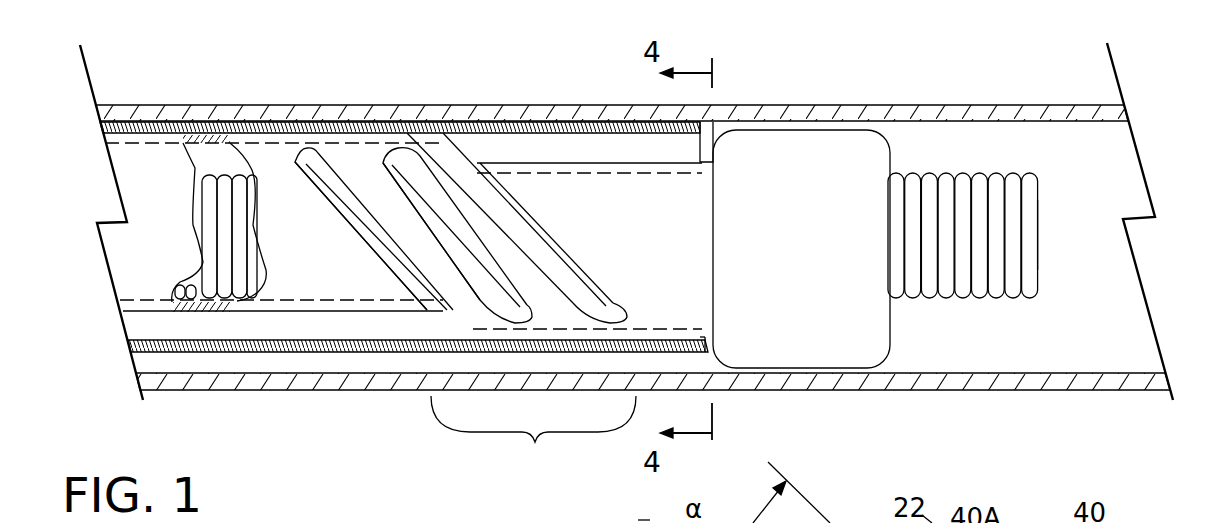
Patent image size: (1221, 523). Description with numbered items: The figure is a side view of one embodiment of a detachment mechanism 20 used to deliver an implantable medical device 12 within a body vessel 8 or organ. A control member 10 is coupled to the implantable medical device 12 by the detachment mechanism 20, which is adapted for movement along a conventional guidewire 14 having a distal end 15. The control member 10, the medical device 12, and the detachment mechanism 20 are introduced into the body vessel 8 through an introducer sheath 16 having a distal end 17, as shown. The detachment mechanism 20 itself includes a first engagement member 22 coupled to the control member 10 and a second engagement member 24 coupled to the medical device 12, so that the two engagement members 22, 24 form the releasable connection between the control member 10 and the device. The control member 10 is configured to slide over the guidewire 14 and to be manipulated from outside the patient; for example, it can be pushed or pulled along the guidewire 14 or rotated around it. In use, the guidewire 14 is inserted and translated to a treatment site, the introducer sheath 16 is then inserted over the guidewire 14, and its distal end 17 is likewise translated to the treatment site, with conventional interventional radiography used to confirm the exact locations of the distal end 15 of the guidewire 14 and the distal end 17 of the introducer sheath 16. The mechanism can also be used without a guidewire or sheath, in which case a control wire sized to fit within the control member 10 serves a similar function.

The body vessel 8 is at (1020, 104).
The control member 10 is at (272, 158).
The implantable medical device 12 is at (818, 143).
The guidewire 14 is at (932, 182).
The distal end 15 is at (1053, 228).
The introducer sheath 16 is at (207, 343).
The distal end 17 is at (708, 132).
The detachment mechanism 20 is at (465, 308).
The first engagement member 22 is at (417, 212).
The second engagement member 24 is at (477, 222).